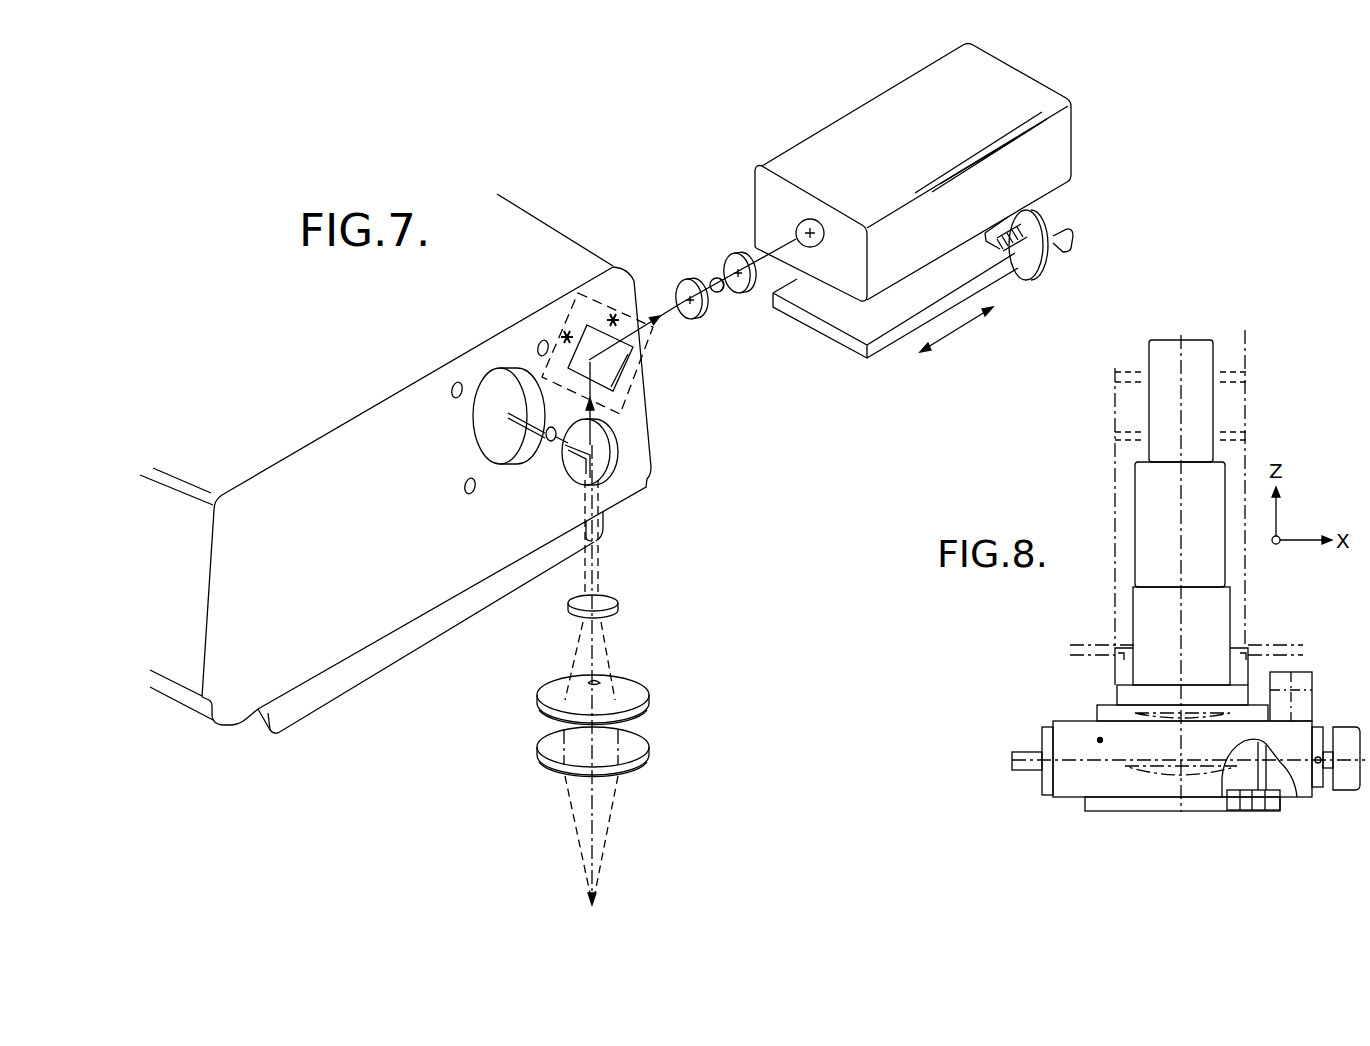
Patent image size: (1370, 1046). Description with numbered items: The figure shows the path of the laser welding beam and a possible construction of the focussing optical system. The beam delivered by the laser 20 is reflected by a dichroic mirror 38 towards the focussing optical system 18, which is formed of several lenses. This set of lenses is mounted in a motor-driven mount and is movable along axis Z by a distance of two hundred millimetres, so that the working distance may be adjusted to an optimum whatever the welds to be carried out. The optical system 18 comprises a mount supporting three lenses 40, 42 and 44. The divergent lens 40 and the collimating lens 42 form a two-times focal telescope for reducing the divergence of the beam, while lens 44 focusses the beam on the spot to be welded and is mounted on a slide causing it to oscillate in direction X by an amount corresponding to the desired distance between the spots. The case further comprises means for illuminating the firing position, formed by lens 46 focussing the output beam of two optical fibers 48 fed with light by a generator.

In FIG. 7, the focussing optical system 18 is at (627, 605).
In FIG. 8, the focussing optical system 18 is at (1091, 704).
In FIG. 7, the laser 20 is at (534, 240).
In FIG. 7, the dichroic mirror 38 is at (610, 460).
In FIG. 7, the lens 40 is at (715, 274).
In FIG. 8, the lens 40 is at (1220, 713).
In FIG. 7, the lens 42 is at (925, 98).
In FIG. 8, the lens 42 is at (1147, 778).
In FIG. 8, the lens 44 is at (1172, 812).
In FIG. 8, the lens 46 is at (1260, 805).
In FIG. 8, the optical fibers 48 is at (1292, 795).